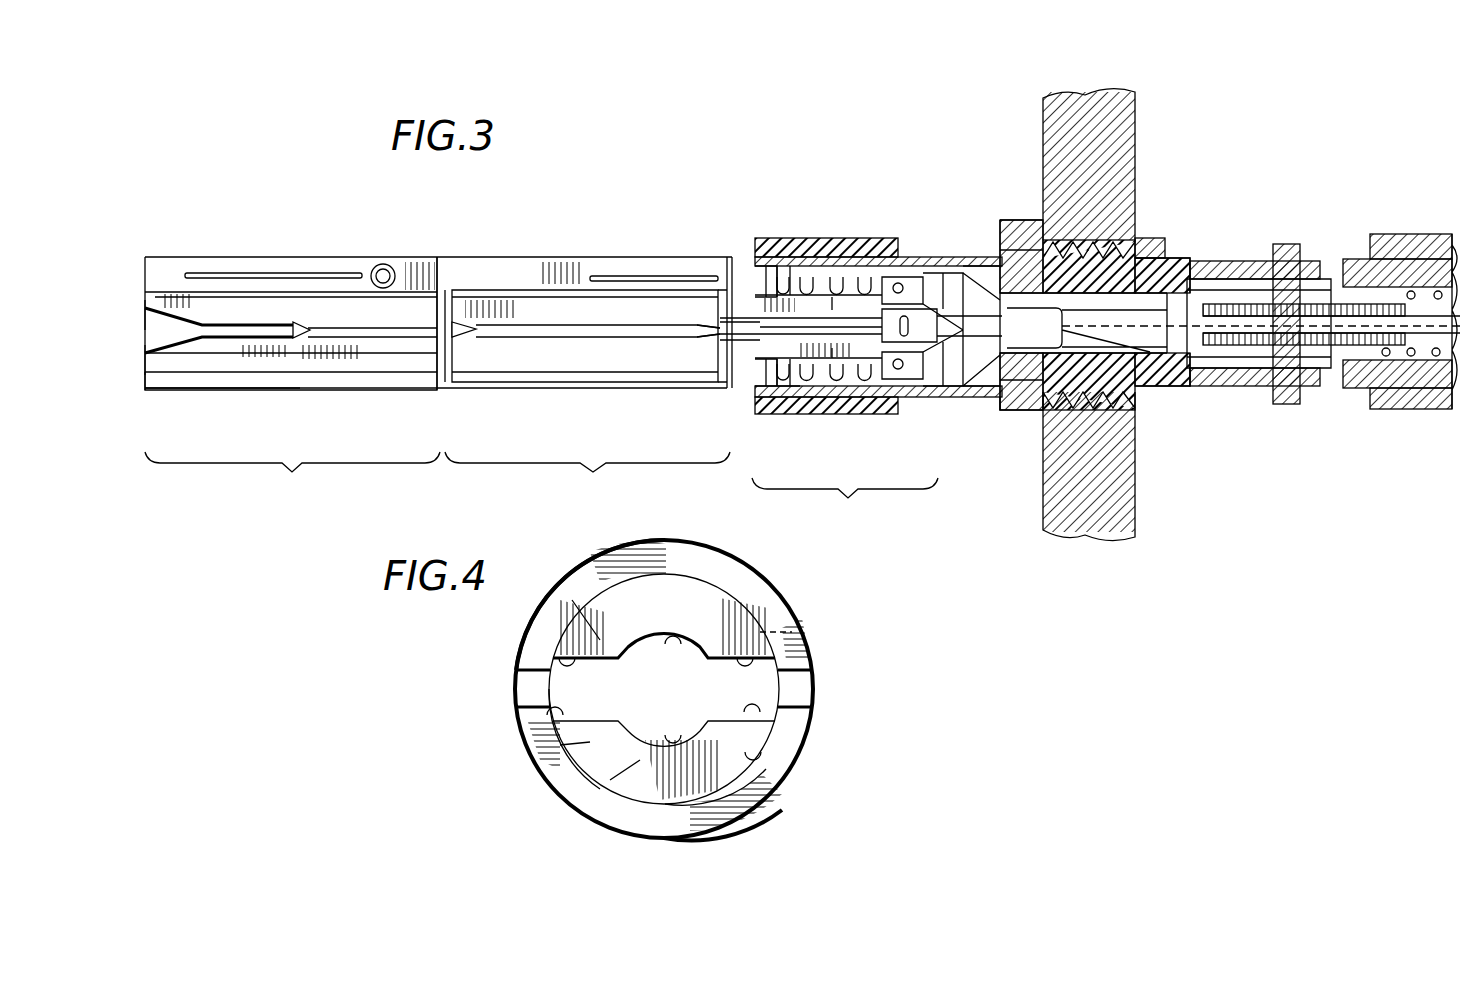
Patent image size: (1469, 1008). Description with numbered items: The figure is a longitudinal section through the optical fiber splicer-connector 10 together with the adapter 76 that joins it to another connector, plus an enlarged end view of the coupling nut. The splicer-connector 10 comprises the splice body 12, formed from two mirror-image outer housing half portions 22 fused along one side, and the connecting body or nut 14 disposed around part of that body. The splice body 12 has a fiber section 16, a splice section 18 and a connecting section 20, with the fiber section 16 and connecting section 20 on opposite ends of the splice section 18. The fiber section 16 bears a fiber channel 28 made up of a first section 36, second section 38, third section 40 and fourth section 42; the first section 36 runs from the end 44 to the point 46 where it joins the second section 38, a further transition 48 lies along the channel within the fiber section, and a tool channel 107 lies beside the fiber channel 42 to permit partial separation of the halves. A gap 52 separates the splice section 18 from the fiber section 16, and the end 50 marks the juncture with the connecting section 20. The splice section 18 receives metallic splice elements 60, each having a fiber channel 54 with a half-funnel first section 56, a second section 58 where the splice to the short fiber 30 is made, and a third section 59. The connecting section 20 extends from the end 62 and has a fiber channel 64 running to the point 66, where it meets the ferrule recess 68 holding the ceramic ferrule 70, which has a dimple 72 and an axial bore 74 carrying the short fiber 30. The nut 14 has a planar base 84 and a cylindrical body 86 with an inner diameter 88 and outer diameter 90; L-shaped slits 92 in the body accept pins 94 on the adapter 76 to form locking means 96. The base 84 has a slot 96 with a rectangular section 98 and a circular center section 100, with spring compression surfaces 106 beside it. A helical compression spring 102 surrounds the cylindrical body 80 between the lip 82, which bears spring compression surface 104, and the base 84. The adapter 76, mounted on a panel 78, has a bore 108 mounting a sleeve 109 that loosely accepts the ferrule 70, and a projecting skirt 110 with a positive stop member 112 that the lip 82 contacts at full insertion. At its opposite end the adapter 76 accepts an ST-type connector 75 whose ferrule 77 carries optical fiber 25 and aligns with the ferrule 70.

In FIG. 3, the splicer-connector 10 is at (262, 170).
In FIG. 3, the splice body 12 is at (183, 393).
In FIG. 3, the connecting body 14 is at (803, 420).
In FIG. 4, the connecting body 14 is at (514, 645).
In FIG. 3, the fiber section 16 is at (292, 478).
In FIG. 3, the splice section 18 is at (587, 477).
In FIG. 3, the connecting section 20 is at (845, 502).
In FIG. 3, the outer housing half portion 22 is at (232, 257).
In FIG. 3, the optical fiber 25 is at (1300, 300).
In FIG. 3, the fiber channel 28 is at (140, 322).
In FIG. 3, the short fiber 30 is at (958, 300).
In FIG. 3, the first section 36 is at (145, 312).
In FIG. 3, the second section 38 is at (213, 325).
In FIG. 3, the third section 40 is at (300, 328).
In FIG. 3, the fourth section 42 is at (420, 300).
In FIG. 3, the end 44 is at (143, 380).
In FIG. 3, the point 46 is at (210, 345).
In FIG. 3, the tip 48 is at (300, 330).
In FIG. 3, the end 50 is at (315, 345).
In FIG. 3, the gap 52 is at (440, 385).
In FIG. 3, the fiber channel 54 is at (530, 330).
In FIG. 3, the first section 56 is at (462, 328).
In FIG. 3, the second section 58 is at (560, 332).
In FIG. 3, the third section 59 is at (695, 320).
In FIG. 3, the splice element 60 is at (585, 305).
In FIG. 3, the end 62 is at (715, 283).
In FIG. 3, the fiber channel 64 is at (720, 337).
In FIG. 3, the point 66 is at (890, 416).
In FIG. 3, the ferrule recess 68 is at (950, 400).
In FIG. 3, the ferrule 70 is at (935, 273).
In FIG. 3, the dimple 72 is at (905, 277).
In FIG. 3, the axial bore 74 is at (1140, 345).
In FIG. 3, the connector 75 is at (1410, 412).
In FIG. 3, the adapter 76 is at (1020, 414).
In FIG. 3, the ferrule 77 is at (1285, 404).
In FIG. 3, the panel 78 is at (1105, 512).
In FIG. 3, the cylindrical body 80 is at (828, 416).
In FIG. 3, the lip 82 is at (905, 400).
In FIG. 3, the base 84 is at (770, 250).
In FIG. 4, the base 84 is at (598, 768).
In FIG. 3, the cylindrical body 86 is at (765, 418).
In FIG. 4, the cylindrical body 86 is at (796, 612).
In FIG. 3, the inner diameter 88 is at (812, 270).
In FIG. 4, the inner diameter 88 is at (760, 752).
In FIG. 3, the outer diameter 90 is at (838, 262).
In FIG. 4, the outer diameter 90 is at (745, 815).
In FIG. 3, the L-shaped slit 92 is at (885, 243).
In FIG. 4, the L-shaped slit 92 is at (526, 690).
In FIG. 3, the pin 94 is at (862, 243).
In FIG. 3, the slot 96 is at (752, 412).
In FIG. 4, the slot 96 is at (590, 745).
In FIG. 4, the rectangular section 98 is at (567, 660).
In FIG. 4, the circular center section 100 is at (671, 640).
In FIG. 3, the helical compression spring 102 is at (780, 420).
In FIG. 3, the spring compression surface 104 is at (845, 322).
In FIG. 4, the spring compression surface 106 is at (641, 600).
In FIG. 3, the tool channel 107 is at (140, 361).
In FIG. 3, the bore 108 is at (1150, 245).
In FIG. 3, the sleeve 109 is at (1172, 382).
In FIG. 3, the projecting skirt 110 is at (1000, 260).
In FIG. 3, the positive stop member 112 is at (998, 408).